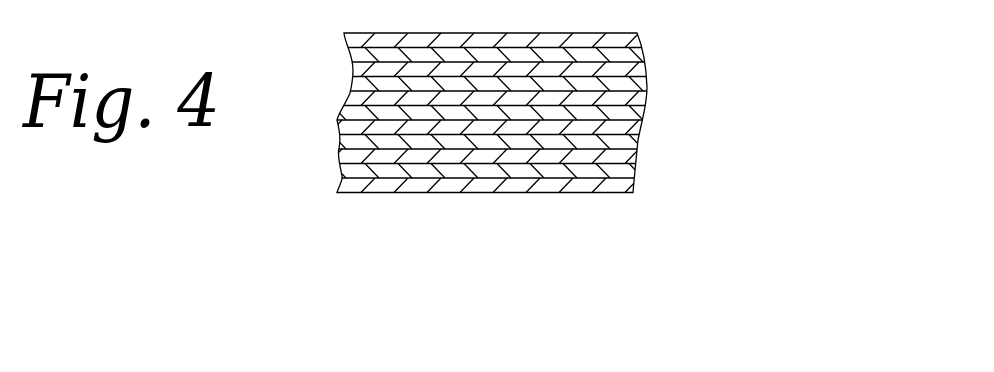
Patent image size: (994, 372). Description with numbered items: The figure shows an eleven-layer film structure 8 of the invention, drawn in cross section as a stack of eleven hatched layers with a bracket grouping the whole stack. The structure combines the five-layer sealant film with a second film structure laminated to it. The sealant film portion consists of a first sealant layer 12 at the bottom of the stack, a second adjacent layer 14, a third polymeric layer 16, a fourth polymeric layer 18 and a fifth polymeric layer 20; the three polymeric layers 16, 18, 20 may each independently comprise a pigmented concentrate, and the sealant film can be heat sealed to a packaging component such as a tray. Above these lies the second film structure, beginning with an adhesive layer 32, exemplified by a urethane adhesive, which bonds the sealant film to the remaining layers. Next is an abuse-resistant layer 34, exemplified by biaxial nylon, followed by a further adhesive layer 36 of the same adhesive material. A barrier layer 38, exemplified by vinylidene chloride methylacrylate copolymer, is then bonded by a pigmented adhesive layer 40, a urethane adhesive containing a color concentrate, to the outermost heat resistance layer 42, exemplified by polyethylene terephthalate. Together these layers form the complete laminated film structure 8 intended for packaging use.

The eleven-layer film structure 8 is at (827, 12).
The first sealant layer 12 is at (633, 186).
The second adjacent layer 14 is at (634, 171).
The third polymeric layer 16 is at (636, 157).
The fourth polymeric layer 18 is at (638, 143).
The fifth polymeric layer 20 is at (640, 128).
The adhesive layer 32 is at (643, 115).
The abuse-resistant layer 34 is at (645, 100).
The adhesive layer 36 is at (647, 85).
The barrier layer 38 is at (645, 68).
The pigmented adhesive layer 40 is at (643, 51).
The heat resistance layer 42 is at (639, 34).